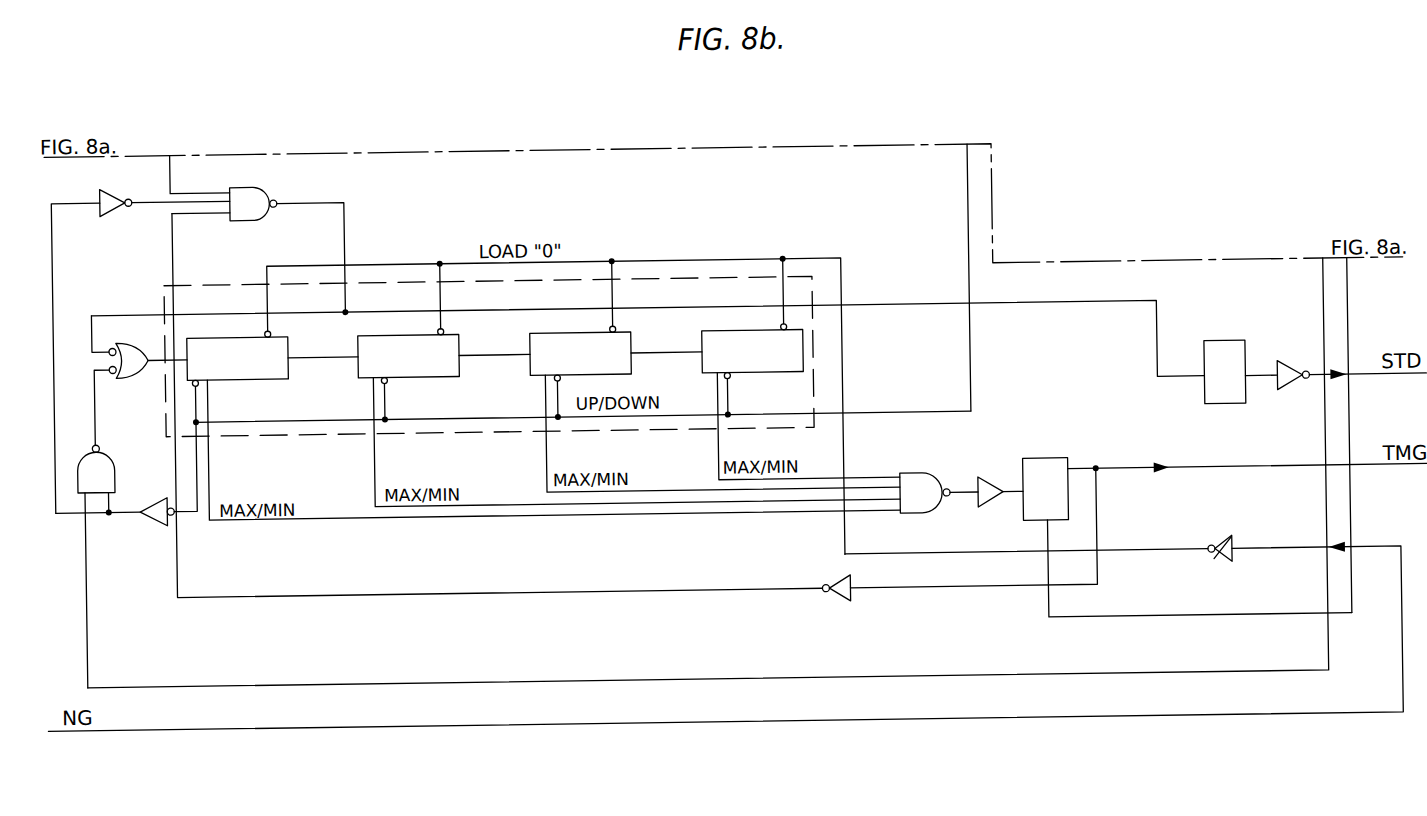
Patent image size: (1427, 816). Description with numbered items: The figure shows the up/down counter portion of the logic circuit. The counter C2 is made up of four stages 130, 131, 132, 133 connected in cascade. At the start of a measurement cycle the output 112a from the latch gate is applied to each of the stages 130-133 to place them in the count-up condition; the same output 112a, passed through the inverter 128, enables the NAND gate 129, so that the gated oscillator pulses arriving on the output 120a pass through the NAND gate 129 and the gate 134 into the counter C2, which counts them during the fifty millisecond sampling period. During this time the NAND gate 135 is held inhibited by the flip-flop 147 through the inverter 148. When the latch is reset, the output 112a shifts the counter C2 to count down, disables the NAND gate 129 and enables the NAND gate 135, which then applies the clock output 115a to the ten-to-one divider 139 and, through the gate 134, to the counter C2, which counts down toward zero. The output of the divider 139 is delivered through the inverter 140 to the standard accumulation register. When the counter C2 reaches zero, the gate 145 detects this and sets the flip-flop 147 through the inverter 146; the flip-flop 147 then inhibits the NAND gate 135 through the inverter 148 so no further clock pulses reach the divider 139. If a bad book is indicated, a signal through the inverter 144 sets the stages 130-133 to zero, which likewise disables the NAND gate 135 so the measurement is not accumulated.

The output of gate 112 112a is at (968, 157).
The output of clock 115 115a is at (174, 173).
The output of gate 120 120a is at (1323, 278).
The inverter 128 is at (157, 490).
The NAND gate 129 is at (113, 458).
The counter stage 130 is at (253, 373).
The counter stage 131 is at (419, 373).
The counter stage 132 is at (624, 373).
The counter stage 133 is at (752, 373).
The gate 134 is at (146, 329).
The NAND gate 135 is at (259, 181).
The 10:1 divider 139 is at (1216, 348).
The inverter 140 is at (1300, 355).
The inverter 144 is at (1215, 544).
The gate 145 is at (928, 476).
The inverter 146 is at (992, 481).
The flip-flop 147 is at (1064, 463).
The inverter 148 is at (835, 600).
The up/down counter C2 is at (633, 429).